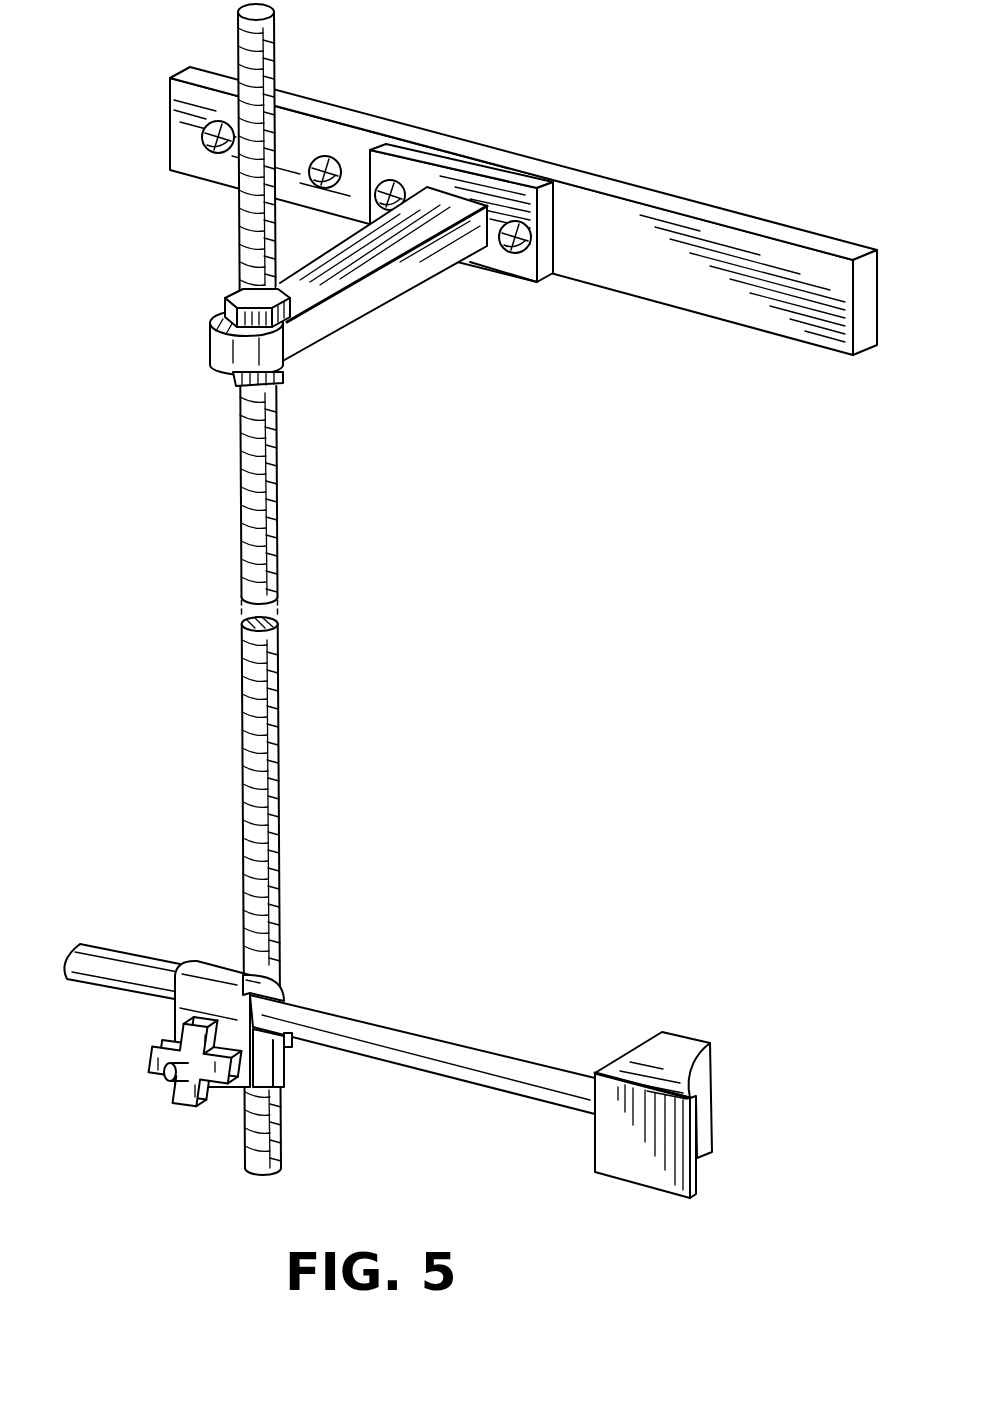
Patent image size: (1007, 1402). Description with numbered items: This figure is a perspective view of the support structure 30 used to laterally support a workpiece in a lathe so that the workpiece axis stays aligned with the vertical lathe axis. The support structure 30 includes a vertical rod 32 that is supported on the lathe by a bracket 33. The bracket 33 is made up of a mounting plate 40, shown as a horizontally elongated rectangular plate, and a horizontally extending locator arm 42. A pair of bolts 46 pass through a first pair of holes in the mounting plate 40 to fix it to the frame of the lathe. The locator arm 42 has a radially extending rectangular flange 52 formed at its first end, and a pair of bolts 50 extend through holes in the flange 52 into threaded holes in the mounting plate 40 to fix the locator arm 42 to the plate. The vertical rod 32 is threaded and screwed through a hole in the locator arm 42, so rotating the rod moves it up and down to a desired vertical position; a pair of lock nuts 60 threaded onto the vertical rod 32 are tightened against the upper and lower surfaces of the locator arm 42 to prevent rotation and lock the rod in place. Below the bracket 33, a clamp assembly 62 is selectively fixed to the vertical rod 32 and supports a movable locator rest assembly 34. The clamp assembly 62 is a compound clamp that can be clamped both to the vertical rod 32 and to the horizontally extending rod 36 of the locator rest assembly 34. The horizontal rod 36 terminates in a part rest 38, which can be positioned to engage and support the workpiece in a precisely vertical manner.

The support structure 30 is at (660, 121).
The vertical rod 32 is at (252, 542).
The bracket 33 is at (487, 267).
The locator rest assembly 34 is at (133, 988).
The horizontally extending rod 36 is at (368, 1033).
The part rest 38 is at (658, 1058).
The mounting plate 40 is at (762, 318).
The locator arm 42 is at (372, 302).
The bolts 46 is at (331, 158).
The bolts 50 is at (402, 180).
The radially extending rectangular flange 52 is at (510, 195).
The lock nuts 60 is at (225, 303).
The clamp assembly 62 is at (203, 985).